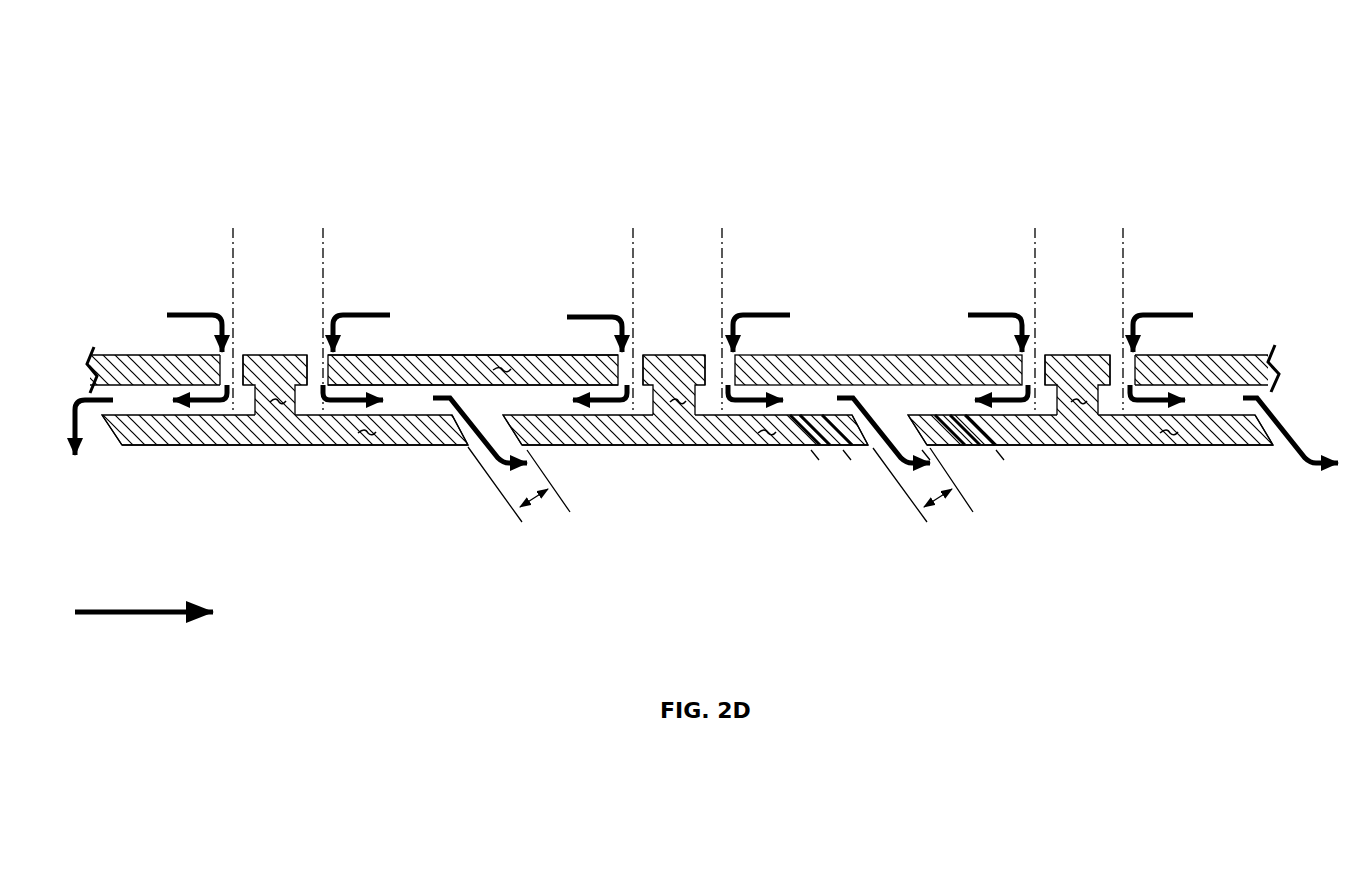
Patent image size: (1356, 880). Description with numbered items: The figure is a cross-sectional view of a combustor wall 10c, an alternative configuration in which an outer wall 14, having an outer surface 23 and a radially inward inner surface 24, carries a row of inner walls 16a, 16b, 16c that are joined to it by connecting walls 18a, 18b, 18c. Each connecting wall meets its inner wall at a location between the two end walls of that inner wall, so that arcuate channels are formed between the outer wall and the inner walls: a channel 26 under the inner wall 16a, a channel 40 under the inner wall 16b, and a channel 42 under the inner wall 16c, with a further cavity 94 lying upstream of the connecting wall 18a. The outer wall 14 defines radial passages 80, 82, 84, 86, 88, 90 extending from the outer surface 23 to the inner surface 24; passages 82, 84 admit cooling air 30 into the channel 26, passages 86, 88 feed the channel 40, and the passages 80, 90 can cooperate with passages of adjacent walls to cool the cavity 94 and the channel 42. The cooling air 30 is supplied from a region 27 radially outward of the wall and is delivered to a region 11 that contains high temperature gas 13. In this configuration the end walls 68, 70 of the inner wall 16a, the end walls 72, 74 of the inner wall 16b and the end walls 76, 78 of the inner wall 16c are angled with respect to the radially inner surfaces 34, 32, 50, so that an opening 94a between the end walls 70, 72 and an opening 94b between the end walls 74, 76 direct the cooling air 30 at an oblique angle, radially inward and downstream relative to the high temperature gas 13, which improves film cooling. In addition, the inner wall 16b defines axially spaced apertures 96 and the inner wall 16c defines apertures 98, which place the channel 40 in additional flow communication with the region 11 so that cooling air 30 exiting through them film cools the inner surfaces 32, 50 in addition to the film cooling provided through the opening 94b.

The wall 10c is at (1212, 228).
The region 11 is at (388, 641).
The high temperature gas 13 is at (137, 615).
The outer wall 14 is at (501, 366).
The inner wall 16a is at (365, 445).
The inner wall 16b is at (765, 445).
The inner wall 16c is at (1168, 445).
The connecting wall 18a is at (279, 398).
The connecting wall 18b is at (679, 398).
The connecting wall 18c is at (1080, 398).
The outer surface 23 is at (523, 355).
The inner surface 24 is at (547, 355).
The channel 26 is at (397, 411).
The region 27 is at (364, 153).
The cooling air 30 is at (217, 343).
The radially inner surface 32 is at (678, 445).
The radially inner surface 34 is at (277, 445).
The channel 40 is at (790, 411).
The channel 42 is at (1195, 411).
The radially inner surface 50 is at (1080, 445).
The upstream end 68 is at (110, 445).
The downstream end 70 is at (465, 447).
The end wall 72 is at (510, 432).
The end wall 74 is at (866, 447).
The end wall 76 is at (917, 433).
The end wall 78 is at (1288, 455).
The radial passage 80 is at (245, 353).
The radial passage 82 is at (311, 353).
The radial passage 84 is at (643, 353).
The radial passage 86 is at (711, 353).
The radial passage 88 is at (1046, 353).
The radial passage 90 is at (1112, 353).
The cavity 94 is at (132, 411).
The opening 94a is at (540, 500).
The opening 94b is at (943, 500).
The apertures 96 is at (832, 447).
The apertures 98 is at (987, 447).